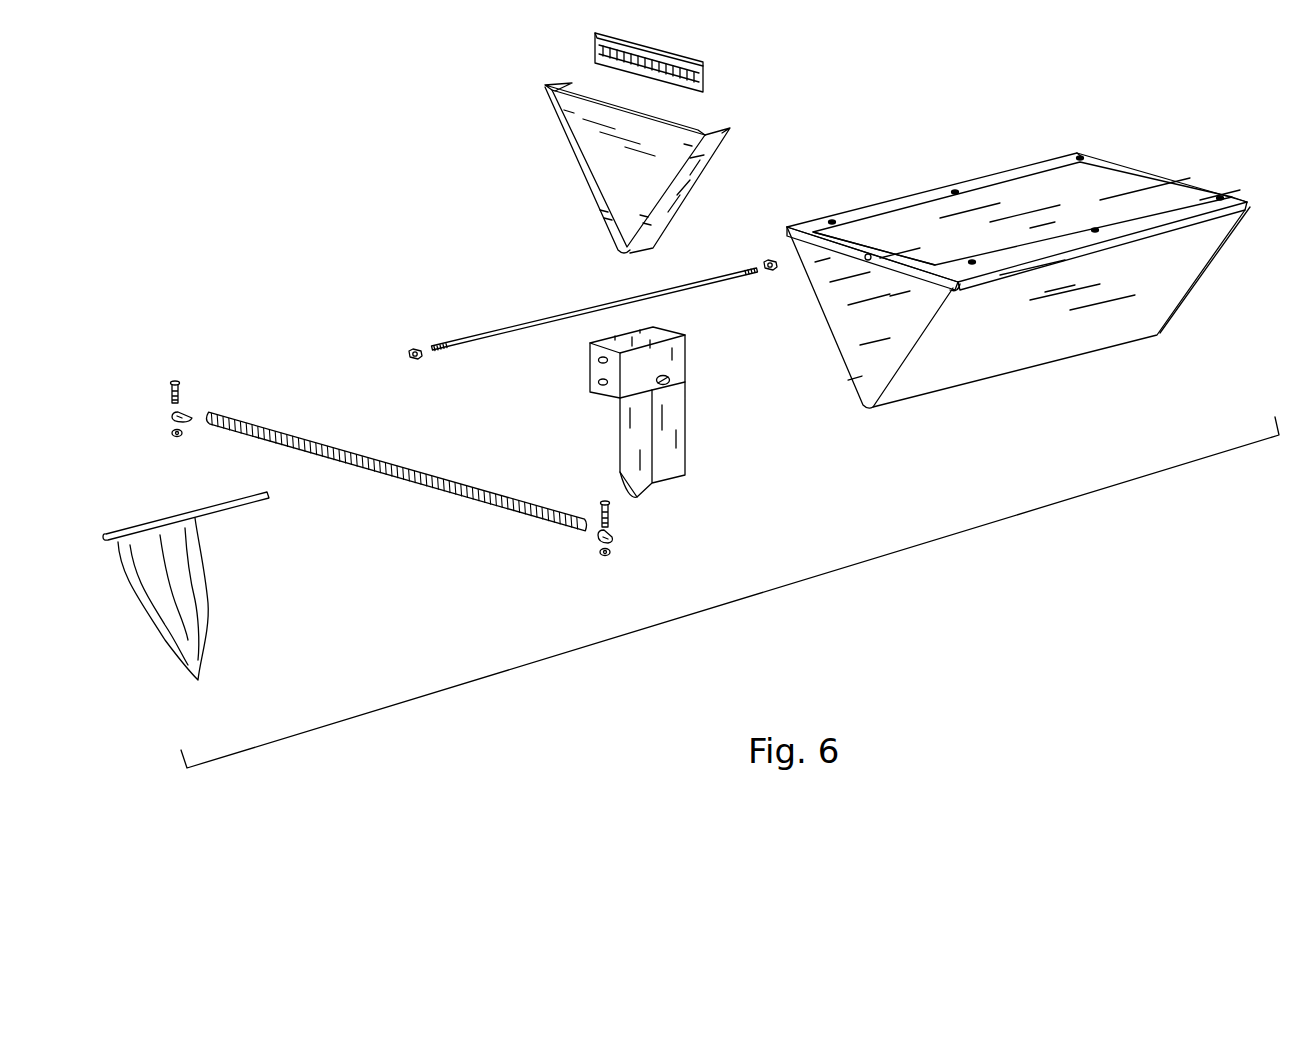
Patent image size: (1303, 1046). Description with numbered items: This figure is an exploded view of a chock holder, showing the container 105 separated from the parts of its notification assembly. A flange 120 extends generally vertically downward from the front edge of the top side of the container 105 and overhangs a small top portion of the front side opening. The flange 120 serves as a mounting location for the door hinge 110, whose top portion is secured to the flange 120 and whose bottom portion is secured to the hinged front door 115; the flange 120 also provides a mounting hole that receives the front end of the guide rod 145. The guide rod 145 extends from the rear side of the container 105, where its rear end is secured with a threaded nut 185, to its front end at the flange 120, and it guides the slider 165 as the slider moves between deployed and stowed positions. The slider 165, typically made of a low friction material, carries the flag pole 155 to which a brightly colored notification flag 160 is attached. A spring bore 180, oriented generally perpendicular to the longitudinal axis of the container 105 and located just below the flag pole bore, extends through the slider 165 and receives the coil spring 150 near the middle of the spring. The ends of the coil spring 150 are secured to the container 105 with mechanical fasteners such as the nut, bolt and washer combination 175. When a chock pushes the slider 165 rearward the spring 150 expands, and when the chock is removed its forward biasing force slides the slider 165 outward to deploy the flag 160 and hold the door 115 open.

The container 105 is at (1162, 188).
The door hinge 110 is at (677, 60).
The hinged front door 115 is at (610, 170).
The flange 120 is at (930, 273).
The guide rod 145 is at (553, 317).
The coil spring 150 is at (468, 498).
The flag pole 155 is at (218, 513).
The notification flag 160 is at (192, 628).
The slider 165 is at (667, 452).
The nut, bolt and washer combination 175 is at (614, 503).
The spring bore 180 is at (668, 380).
The threaded nut 185 is at (765, 260).